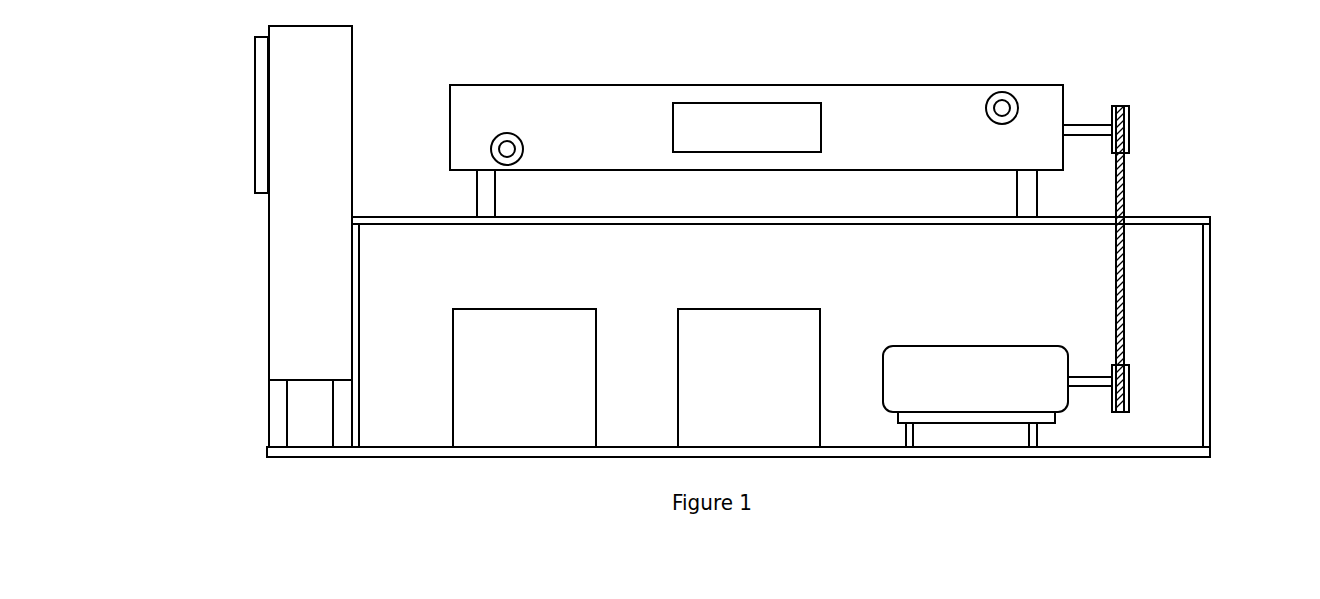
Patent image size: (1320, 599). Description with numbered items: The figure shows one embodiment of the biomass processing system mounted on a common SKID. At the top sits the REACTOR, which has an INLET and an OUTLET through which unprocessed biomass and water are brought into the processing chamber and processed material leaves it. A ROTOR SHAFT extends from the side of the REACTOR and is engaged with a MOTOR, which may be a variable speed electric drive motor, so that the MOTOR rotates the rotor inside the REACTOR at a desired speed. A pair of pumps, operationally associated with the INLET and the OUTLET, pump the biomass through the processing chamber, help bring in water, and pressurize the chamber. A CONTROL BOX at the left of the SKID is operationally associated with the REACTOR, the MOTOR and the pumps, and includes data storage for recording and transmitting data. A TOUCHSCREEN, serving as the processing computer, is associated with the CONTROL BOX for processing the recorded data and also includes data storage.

The touchscreen TOUCHSCREEN is at (263, 151).
The control box CONTROL BOX is at (293, 253).
The skid SKID is at (1191, 216).
The reactor REACTOR is at (756, 151).
The outlet OUTLET is at (516, 153).
The inlet INLET is at (993, 98).
The rotor shaft ROTOR SHAFT is at (1083, 122).
The motor MOTOR is at (975, 396).